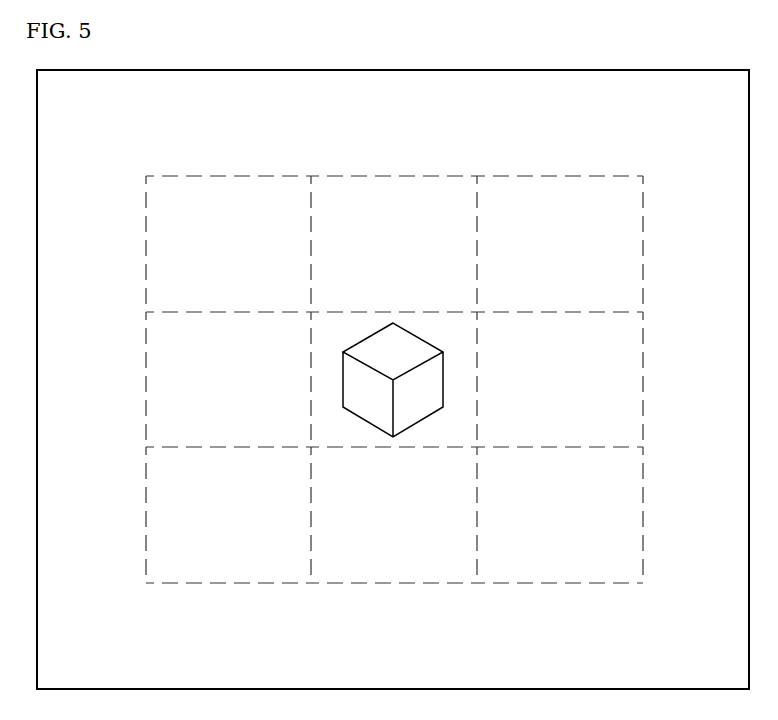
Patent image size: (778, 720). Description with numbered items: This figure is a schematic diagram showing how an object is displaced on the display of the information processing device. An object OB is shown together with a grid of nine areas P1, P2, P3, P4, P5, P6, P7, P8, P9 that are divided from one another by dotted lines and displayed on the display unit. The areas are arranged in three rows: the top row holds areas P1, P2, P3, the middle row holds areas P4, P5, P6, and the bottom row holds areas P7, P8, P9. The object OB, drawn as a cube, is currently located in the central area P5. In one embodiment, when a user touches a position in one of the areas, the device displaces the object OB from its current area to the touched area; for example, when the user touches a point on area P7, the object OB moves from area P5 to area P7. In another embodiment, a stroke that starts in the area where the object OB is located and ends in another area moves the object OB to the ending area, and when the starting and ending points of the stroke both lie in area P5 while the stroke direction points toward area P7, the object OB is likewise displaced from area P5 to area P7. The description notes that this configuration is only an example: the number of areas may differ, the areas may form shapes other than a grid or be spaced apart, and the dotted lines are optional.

The area P1 is at (228, 244).
The area P2 is at (394, 244).
The area P3 is at (560, 244).
The area P4 is at (228, 379).
The area P5 is at (394, 379).
The area P6 is at (560, 379).
The area P7 is at (228, 515).
The area P8 is at (394, 515).
The area P9 is at (560, 515).
The object OB is at (415, 333).